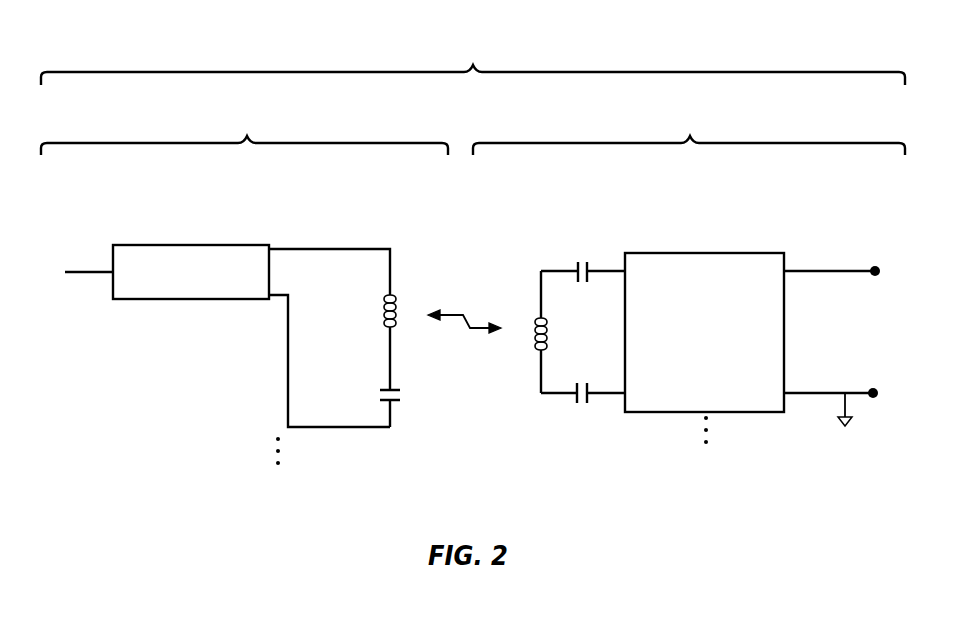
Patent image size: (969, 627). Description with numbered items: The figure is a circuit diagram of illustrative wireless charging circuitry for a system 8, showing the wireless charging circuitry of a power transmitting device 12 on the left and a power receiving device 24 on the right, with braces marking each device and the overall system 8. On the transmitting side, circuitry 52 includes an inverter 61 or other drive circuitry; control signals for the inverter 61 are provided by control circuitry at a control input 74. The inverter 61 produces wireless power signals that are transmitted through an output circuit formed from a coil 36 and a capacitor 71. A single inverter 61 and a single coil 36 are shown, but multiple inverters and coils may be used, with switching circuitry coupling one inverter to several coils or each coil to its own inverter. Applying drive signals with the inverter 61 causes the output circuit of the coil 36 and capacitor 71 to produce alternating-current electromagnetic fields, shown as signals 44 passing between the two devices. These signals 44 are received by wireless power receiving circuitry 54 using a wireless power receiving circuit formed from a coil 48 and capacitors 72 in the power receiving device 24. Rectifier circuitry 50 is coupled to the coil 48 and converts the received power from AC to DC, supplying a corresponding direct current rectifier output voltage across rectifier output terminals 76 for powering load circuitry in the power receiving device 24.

The system 8 is at (473, 63).
The power transmitting device 12 is at (244, 134).
The power receiving device 24 is at (689, 133).
The inverter 61 is at (189, 245).
The control input 74 is at (87, 272).
The coil 36 is at (396, 288).
The capacitor 71 is at (395, 405).
The circuitry 52 is at (218, 402).
The signals 44 is at (466, 316).
The coil 48 is at (534, 357).
The capacitor 72 is at (584, 251).
The rectifier circuitry 50 is at (705, 253).
The rectifier output terminals 76 is at (875, 266).
The wireless power receiving circuitry 54 is at (675, 455).